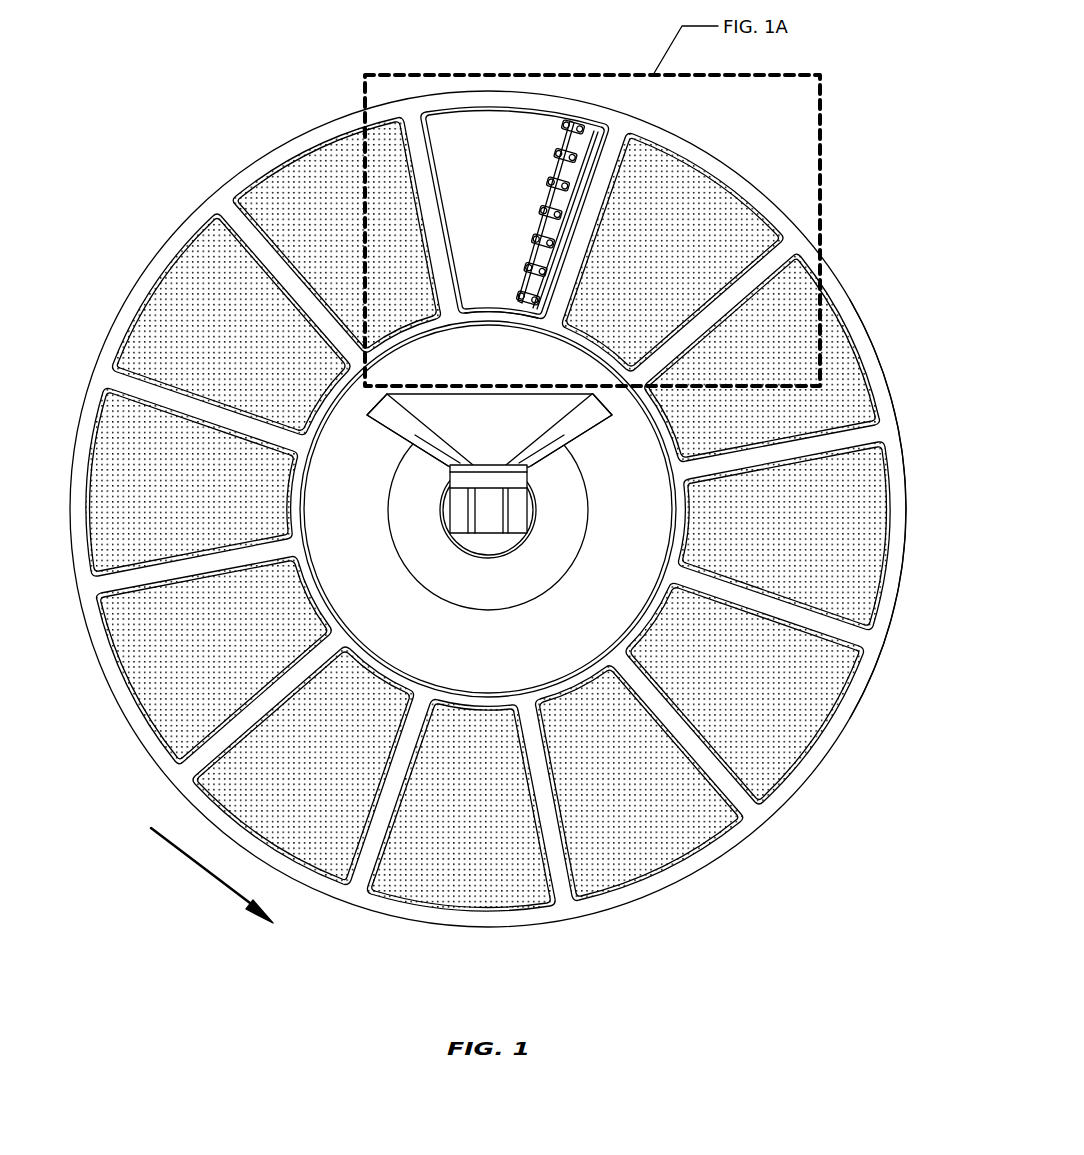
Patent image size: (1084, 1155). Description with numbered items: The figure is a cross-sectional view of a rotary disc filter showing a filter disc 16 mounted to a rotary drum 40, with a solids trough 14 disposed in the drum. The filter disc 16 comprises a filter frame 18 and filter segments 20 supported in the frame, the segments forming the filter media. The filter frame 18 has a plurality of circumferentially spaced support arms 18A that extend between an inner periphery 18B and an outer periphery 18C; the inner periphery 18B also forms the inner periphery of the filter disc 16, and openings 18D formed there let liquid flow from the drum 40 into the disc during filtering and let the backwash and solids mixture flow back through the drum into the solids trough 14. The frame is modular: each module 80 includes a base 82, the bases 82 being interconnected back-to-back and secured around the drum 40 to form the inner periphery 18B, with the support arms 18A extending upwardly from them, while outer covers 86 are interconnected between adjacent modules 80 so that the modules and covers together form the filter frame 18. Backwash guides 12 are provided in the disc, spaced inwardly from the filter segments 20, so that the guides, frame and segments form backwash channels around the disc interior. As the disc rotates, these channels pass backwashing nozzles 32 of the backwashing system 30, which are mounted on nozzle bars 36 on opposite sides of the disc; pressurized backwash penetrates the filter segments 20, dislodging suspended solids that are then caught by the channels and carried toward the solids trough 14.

The backwash guide 12 is at (586, 138).
The solids trough 14 is at (535, 420).
The filter disc 16 is at (180, 158).
The filter frame 18 is at (160, 222).
The support arm 18A is at (843, 440).
The inner periphery 18B is at (300, 617).
The outer periphery 18C is at (85, 666).
The opening 18D is at (507, 315).
The filter segment 20 is at (197, 300).
The backwashing system 30 is at (524, 184).
The backwashing nozzle 32 is at (560, 153).
The nozzle bar 36 is at (560, 167).
The rotary drum 40 is at (375, 655).
The module 80 is at (797, 655).
The base 82 is at (662, 583).
The outer cover 86 is at (895, 477).